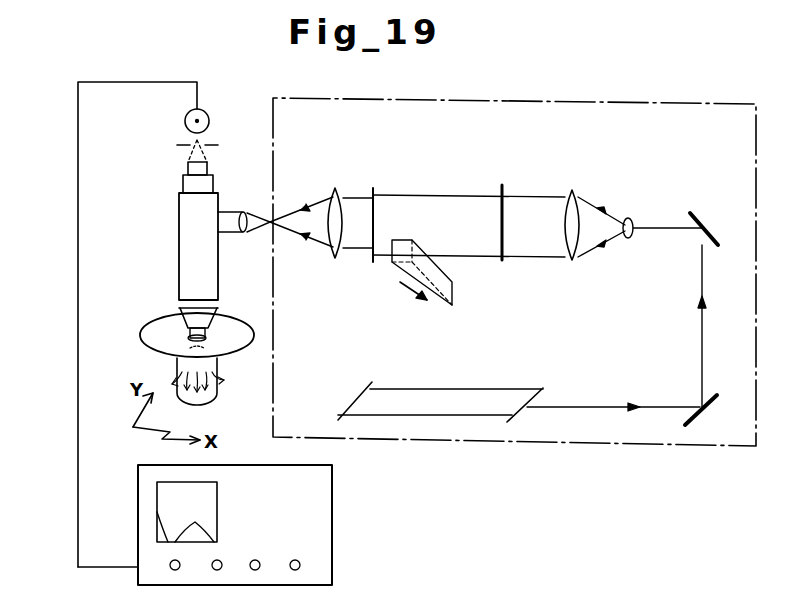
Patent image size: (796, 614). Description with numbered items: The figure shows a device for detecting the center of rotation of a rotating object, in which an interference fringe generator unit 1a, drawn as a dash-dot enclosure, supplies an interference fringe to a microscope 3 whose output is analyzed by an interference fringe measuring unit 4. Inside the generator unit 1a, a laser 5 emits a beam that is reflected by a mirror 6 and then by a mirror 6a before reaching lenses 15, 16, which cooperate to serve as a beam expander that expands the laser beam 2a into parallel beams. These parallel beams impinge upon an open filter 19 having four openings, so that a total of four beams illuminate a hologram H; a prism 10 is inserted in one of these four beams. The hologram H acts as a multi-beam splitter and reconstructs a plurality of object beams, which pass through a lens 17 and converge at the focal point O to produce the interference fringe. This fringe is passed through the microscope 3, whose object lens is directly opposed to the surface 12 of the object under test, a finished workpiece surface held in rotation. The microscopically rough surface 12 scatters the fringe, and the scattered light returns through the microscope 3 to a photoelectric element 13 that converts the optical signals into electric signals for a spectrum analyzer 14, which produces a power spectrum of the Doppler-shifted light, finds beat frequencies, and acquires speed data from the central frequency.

The interference fringe generator unit 1a is at (538, 104).
The light beam 2a is at (543, 274).
The microscope 3 is at (179, 240).
The interference fringe measuring unit 4 is at (62, 448).
The laser 5 is at (405, 389).
The mirror 6 is at (697, 422).
The mirror 6a is at (700, 212).
The prism 10 is at (452, 300).
The surface of object under test 12 is at (153, 326).
The photoelectric element 13 is at (209, 119).
The spectrum analyzer 14 is at (327, 508).
The lens 15 is at (630, 218).
The lens 16 is at (574, 190).
The lens 17 is at (335, 188).
The open filter 19 is at (500, 185).
The hologram H is at (375, 190).
The focal point O is at (290, 217).